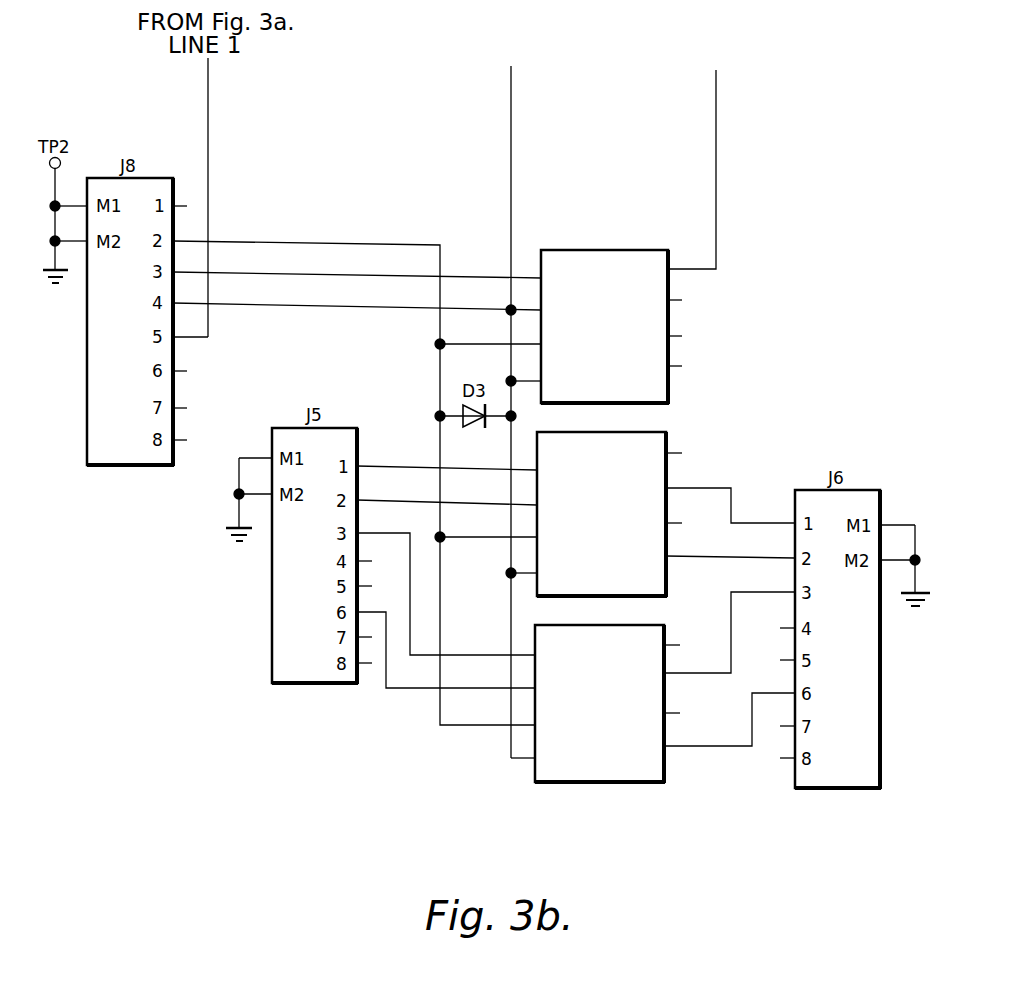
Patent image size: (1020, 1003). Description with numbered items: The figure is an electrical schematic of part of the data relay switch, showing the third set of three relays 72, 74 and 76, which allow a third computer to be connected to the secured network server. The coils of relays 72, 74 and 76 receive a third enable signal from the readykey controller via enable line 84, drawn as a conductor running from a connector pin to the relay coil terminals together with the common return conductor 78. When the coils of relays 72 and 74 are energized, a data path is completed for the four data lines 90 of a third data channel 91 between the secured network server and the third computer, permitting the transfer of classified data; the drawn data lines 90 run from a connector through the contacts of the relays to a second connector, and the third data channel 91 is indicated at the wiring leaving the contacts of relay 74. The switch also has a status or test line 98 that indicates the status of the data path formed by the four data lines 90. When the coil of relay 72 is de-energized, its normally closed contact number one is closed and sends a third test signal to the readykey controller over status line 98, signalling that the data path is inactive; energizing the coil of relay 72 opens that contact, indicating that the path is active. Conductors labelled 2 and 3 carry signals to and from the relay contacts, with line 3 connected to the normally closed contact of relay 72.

The line 2 is at (520, 401).
The line 3 is at (695, 157).
The relay 72 is at (655, 250).
The relay 74 is at (660, 432).
The relay 76 is at (628, 782).
The conductor from J8 pin 4 to relay K7 COM2 78 is at (349, 308).
The enable line 84 is at (320, 242).
The data lines 90 is at (402, 500).
The third data channel 91 is at (752, 501).
The status line 98 is at (486, 278).